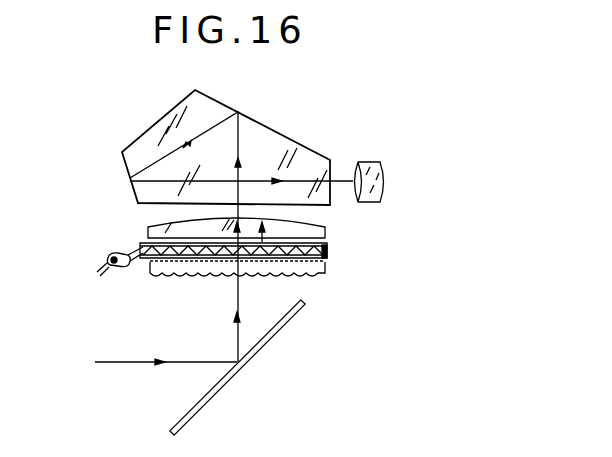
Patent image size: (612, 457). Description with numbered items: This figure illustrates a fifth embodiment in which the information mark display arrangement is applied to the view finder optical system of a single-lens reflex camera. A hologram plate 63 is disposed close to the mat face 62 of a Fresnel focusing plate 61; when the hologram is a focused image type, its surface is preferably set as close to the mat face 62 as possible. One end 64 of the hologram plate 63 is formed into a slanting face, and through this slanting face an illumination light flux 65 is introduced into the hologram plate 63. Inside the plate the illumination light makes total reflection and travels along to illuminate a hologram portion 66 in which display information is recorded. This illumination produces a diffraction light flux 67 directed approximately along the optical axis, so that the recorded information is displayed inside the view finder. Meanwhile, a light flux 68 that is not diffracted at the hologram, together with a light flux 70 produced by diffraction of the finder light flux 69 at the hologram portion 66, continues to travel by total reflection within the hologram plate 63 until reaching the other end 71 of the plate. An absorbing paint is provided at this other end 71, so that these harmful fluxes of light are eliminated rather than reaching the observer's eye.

The Fresnel focusing plate 61 is at (320, 268).
The mat face 62 is at (312, 276).
The hologram plate 63 is at (330, 246).
The one end of the hologram plate 64 is at (142, 254).
The illumination light flux 65 is at (110, 254).
The hologram portion 66 is at (260, 262).
The diffraction light flux 67 is at (290, 225).
The light flux not diffracted at the hologram 68 is at (275, 262).
The finder light flux 69 is at (237, 343).
The light flux produced by diffraction of the finder light flux 70 is at (250, 246).
The other end of the hologram plate 71 is at (323, 259).